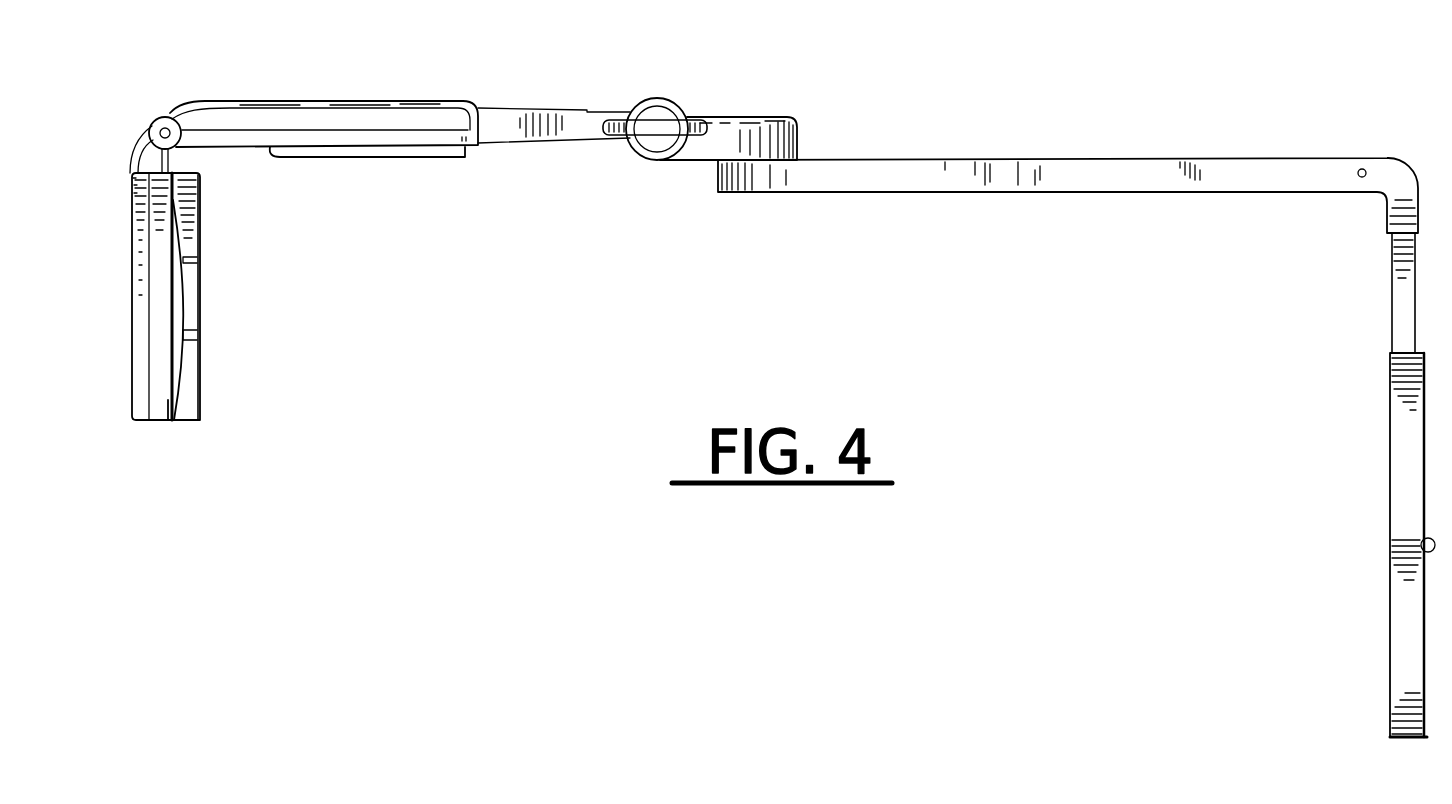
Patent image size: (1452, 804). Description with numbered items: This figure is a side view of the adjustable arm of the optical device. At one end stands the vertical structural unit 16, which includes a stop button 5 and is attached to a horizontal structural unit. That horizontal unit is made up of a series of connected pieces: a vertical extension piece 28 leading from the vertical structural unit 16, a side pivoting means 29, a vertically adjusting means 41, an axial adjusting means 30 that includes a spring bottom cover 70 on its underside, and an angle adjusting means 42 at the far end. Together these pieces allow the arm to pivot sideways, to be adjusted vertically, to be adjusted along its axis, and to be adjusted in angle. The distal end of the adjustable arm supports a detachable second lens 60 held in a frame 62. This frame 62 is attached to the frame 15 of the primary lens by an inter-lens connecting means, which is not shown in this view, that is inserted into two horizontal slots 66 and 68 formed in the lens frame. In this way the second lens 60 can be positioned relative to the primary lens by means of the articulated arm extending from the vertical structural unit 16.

The frame 15 is at (140, 422).
The vertical structural unit 16 is at (1360, 510).
The vertical extension piece 28 is at (1057, 158).
The side pivoting means 29 is at (797, 117).
The axial adjusting means 30 is at (348, 101).
The vertically adjusting means 41 is at (661, 100).
The angle adjusting means 42 is at (152, 118).
The stop button 5 is at (1432, 537).
The detachable second lens 60 is at (180, 304).
The frame 62 is at (168, 422).
The horizontal slot 66 is at (192, 266).
The horizontal slot 68 is at (190, 338).
The spring bottom cover 70 is at (411, 158).